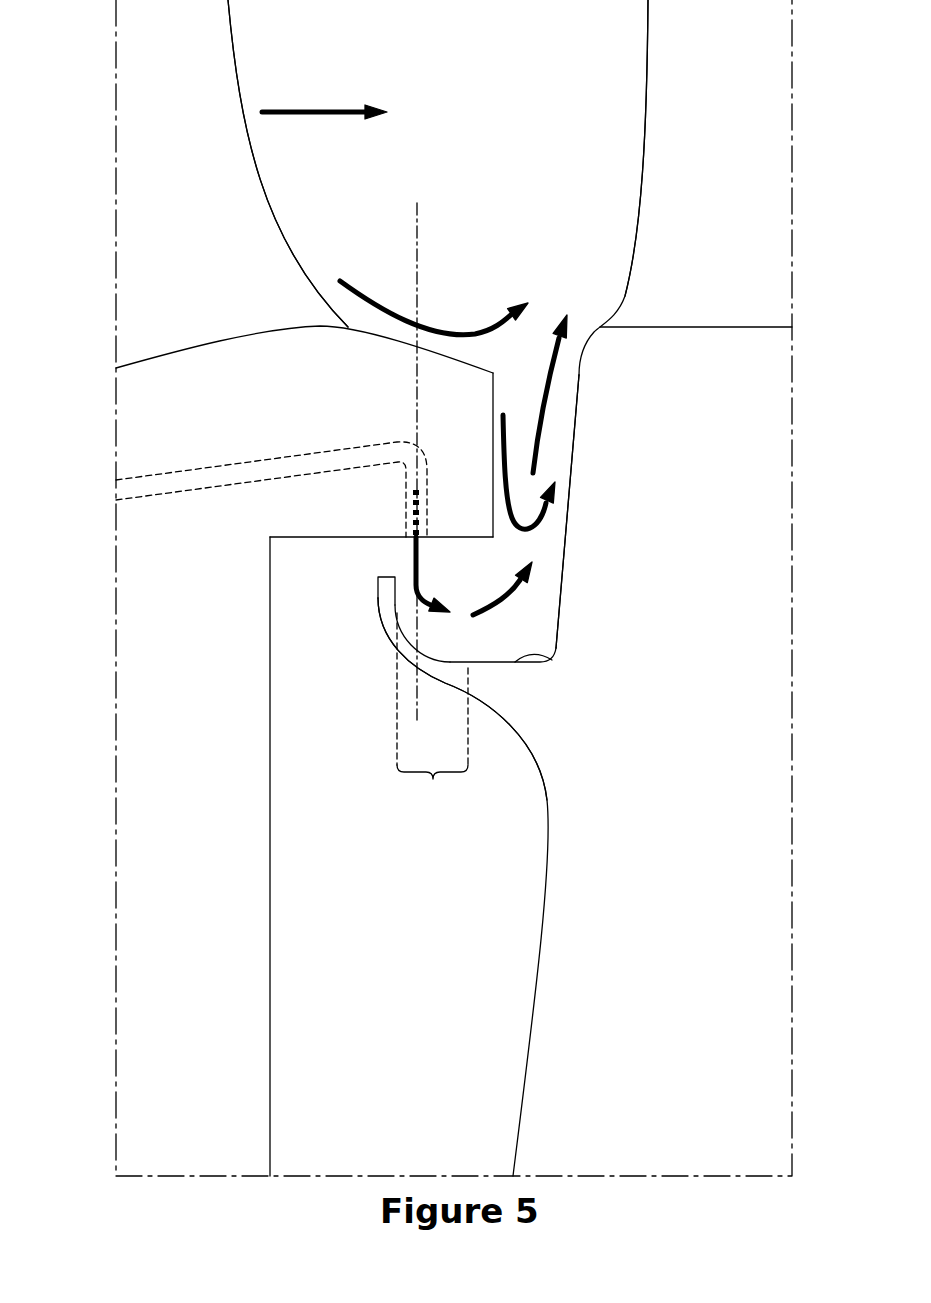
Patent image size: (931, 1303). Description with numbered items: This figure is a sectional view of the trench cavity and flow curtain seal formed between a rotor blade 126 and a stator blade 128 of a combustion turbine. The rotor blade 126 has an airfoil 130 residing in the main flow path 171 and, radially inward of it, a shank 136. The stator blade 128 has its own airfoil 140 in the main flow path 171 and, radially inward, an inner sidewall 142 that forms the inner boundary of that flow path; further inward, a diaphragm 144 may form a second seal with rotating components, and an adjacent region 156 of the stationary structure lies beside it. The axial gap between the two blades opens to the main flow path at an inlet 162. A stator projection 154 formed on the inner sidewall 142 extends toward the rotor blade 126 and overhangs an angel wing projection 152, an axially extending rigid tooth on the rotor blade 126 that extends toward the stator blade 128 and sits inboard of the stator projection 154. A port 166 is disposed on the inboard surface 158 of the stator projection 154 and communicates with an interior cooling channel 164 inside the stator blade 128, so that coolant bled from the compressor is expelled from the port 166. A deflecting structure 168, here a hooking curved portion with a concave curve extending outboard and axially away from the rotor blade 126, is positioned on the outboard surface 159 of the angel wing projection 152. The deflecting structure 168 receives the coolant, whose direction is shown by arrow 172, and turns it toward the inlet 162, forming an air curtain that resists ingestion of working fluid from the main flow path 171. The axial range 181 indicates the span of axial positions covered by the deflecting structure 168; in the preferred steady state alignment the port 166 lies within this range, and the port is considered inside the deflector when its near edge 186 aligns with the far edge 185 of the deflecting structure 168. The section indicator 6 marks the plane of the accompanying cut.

The section line 6- 6 is at (417, 203).
The rotor blade 126 is at (723, 118).
The stator blade 128 is at (165, 153).
The airfoil 130 is at (734, 242).
The shank 136 is at (754, 494).
The airfoil 140 is at (200, 258).
The inner sidewall 142 is at (325, 403).
The diaphragm 144 is at (200, 859).
The angel wing projection 152 is at (556, 703).
The stator projection 154 is at (470, 431).
The stationary inner structure 156 is at (417, 950).
The inboard surface 158 is at (352, 537).
The outboard surface 159 is at (553, 660).
The inlet 162 is at (518, 385).
The interior cooling channel 164 is at (427, 497).
The port 166 is at (398, 548).
The deflecting structure 168 is at (407, 623).
The main flow path 171 is at (313, 110).
The arrow 172 is at (548, 412).
The axial range 181 is at (432, 712).
The far edge 185 is at (397, 577).
The near edge 186 is at (405, 537).